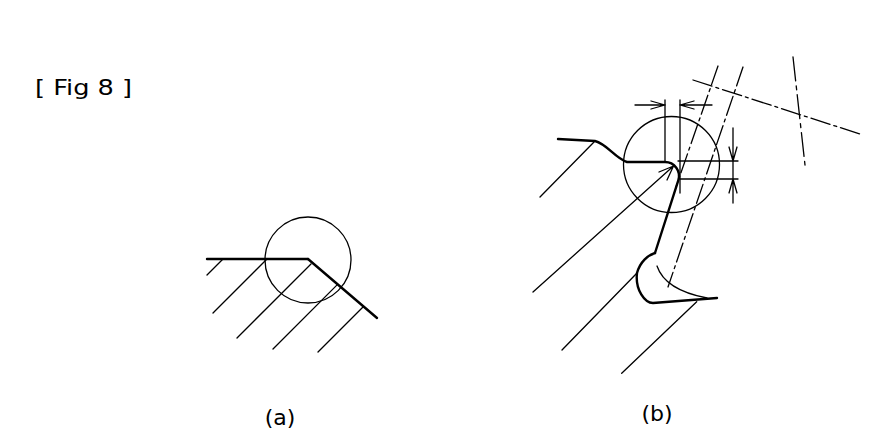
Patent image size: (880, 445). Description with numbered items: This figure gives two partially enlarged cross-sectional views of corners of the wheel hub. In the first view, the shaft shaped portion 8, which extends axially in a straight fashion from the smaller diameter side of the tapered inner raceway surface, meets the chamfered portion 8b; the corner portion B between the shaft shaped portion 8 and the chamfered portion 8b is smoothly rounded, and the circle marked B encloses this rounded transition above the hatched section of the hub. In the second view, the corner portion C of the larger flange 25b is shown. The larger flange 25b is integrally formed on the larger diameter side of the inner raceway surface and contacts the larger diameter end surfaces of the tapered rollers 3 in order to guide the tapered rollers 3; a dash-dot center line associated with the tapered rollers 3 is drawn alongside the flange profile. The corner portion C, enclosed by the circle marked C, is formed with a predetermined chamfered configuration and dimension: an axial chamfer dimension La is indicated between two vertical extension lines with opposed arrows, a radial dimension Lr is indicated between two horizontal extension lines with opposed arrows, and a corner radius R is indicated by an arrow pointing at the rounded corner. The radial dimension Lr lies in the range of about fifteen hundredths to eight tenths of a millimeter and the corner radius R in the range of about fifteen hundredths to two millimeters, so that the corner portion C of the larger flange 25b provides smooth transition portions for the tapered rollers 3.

The shaft shaped portion 8 is at (243, 258).
The chamfered portion 8b is at (360, 302).
The corner portion B is at (308, 248).
The larger flange 25b is at (582, 202).
The corner portion C is at (665, 161).
The corner radius R is at (603, 229).
The axial chamfer dimension La is at (673, 132).
The radial dimension Lr is at (722, 165).
The tapered rollers 3 is at (800, 95).